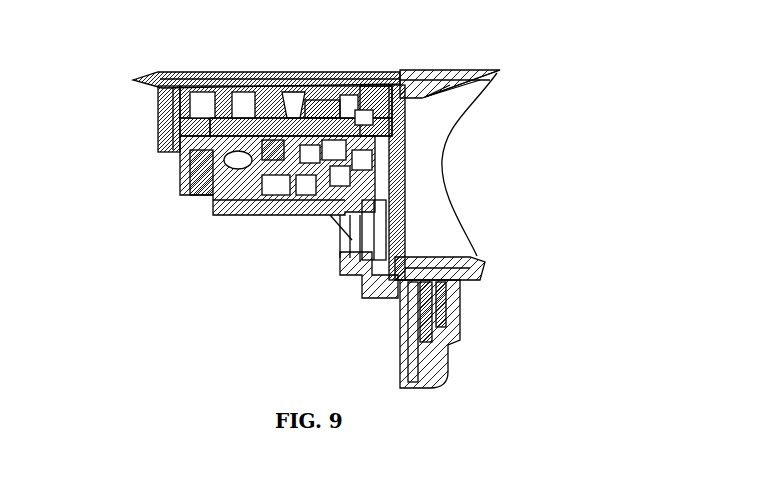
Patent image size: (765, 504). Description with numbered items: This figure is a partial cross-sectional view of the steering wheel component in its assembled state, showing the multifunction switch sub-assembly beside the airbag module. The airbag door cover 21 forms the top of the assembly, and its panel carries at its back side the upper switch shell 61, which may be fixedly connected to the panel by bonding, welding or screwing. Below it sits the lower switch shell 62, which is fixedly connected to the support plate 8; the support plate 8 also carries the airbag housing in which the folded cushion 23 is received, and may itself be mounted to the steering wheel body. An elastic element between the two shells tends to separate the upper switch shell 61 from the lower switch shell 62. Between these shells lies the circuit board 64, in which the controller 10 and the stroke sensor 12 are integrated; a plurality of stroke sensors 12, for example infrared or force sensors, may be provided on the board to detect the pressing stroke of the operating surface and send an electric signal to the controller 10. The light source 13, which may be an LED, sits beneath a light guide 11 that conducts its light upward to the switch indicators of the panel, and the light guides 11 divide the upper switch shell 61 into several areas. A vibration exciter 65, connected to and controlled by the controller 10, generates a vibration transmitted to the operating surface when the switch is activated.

The support plate 8 is at (287, 214).
The controller 10 is at (315, 116).
The light guide 11 is at (187, 95).
The stroke sensor 12 is at (357, 120).
The light source 13 is at (194, 110).
The airbag door cover 21 is at (327, 71).
The folded cushion 23 is at (404, 257).
The upper switch shell 61 is at (141, 106).
The lower switch shell 62 is at (205, 187).
The circuit board 64 is at (151, 133).
The vibration exciter 65 is at (218, 161).